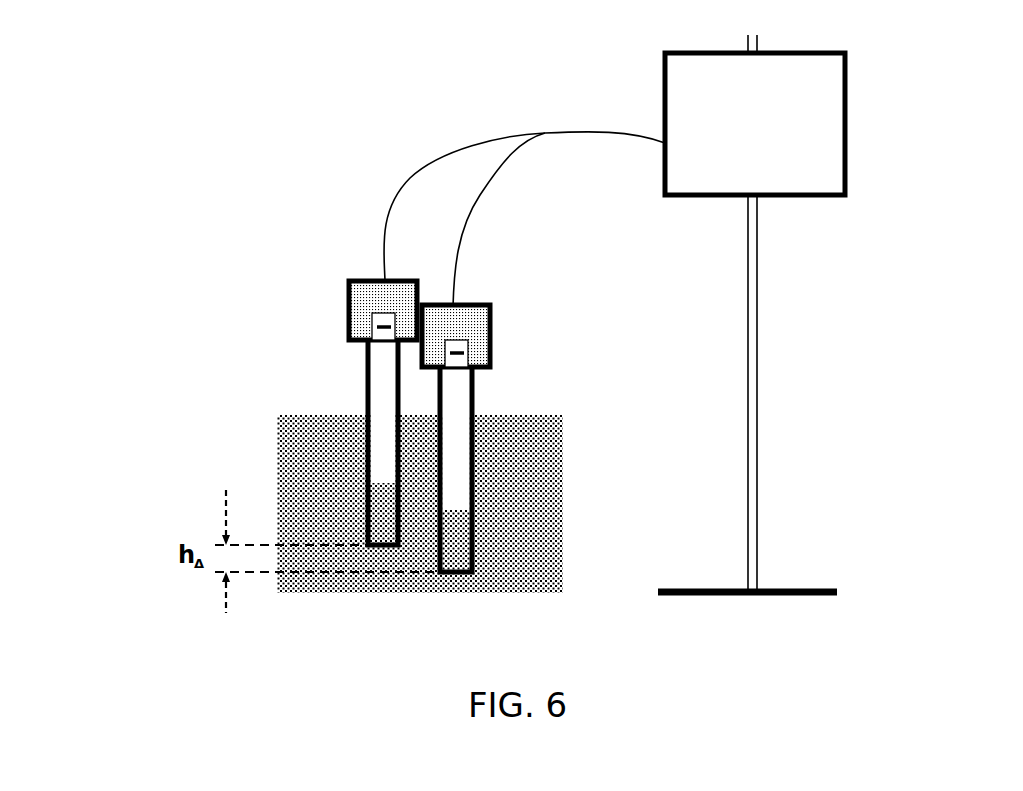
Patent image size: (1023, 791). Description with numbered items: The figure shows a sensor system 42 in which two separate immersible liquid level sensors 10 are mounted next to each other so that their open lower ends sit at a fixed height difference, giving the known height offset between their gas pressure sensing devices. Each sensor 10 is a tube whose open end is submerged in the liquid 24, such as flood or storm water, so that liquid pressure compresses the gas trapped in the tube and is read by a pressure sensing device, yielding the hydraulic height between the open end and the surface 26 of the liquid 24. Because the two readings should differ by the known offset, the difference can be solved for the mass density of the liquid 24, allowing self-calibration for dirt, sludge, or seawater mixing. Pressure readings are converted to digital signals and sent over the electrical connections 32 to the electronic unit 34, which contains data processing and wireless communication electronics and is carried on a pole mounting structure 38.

The immersible liquid level sensor 10 is at (323, 330).
The liquid 24 is at (543, 513).
The surface of the liquid 26 is at (285, 420).
The electrical connections 32 is at (530, 130).
The electronic unit 34 is at (857, 130).
The pole mounting structure 38 is at (787, 502).
The sensor system 42 is at (265, 72).